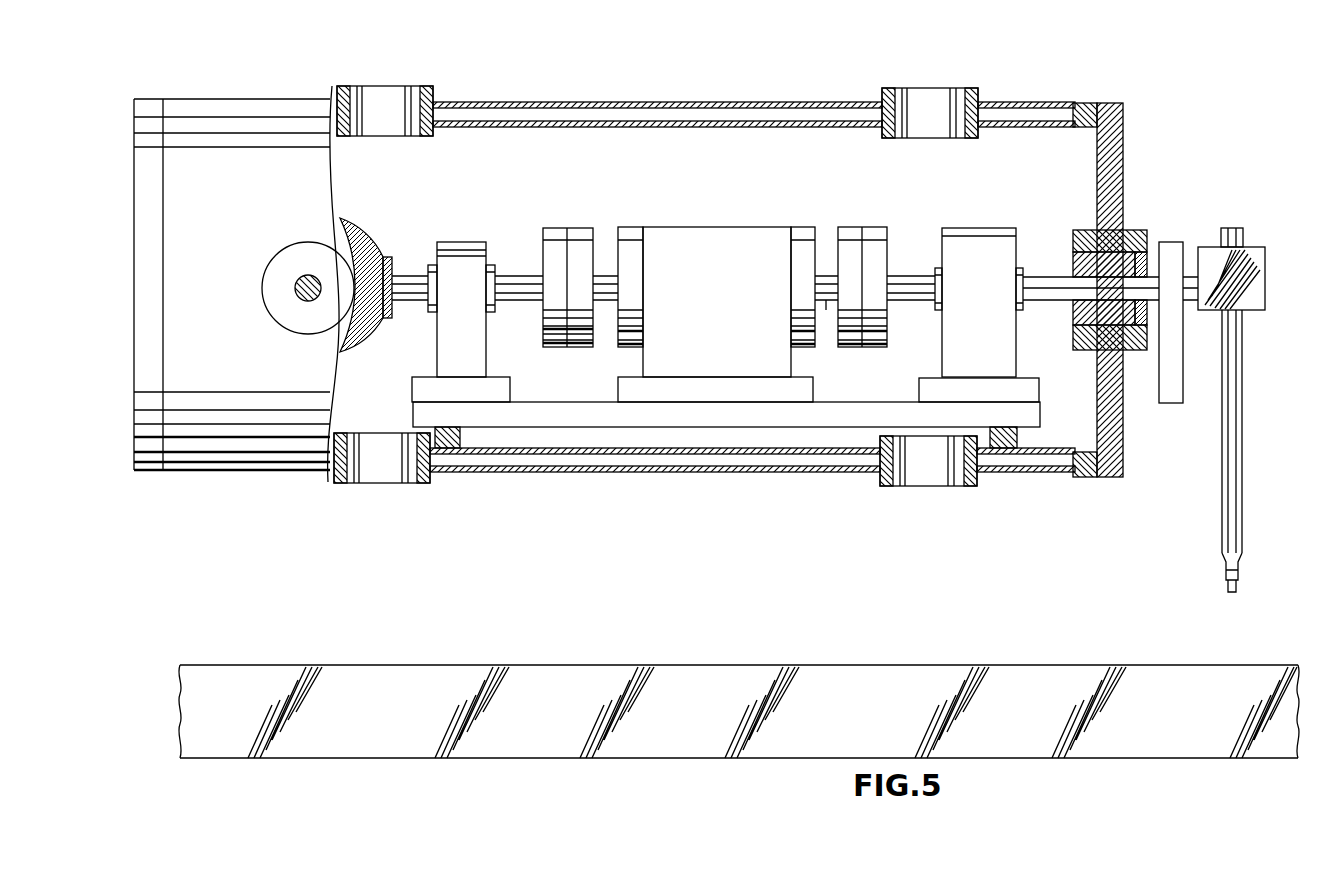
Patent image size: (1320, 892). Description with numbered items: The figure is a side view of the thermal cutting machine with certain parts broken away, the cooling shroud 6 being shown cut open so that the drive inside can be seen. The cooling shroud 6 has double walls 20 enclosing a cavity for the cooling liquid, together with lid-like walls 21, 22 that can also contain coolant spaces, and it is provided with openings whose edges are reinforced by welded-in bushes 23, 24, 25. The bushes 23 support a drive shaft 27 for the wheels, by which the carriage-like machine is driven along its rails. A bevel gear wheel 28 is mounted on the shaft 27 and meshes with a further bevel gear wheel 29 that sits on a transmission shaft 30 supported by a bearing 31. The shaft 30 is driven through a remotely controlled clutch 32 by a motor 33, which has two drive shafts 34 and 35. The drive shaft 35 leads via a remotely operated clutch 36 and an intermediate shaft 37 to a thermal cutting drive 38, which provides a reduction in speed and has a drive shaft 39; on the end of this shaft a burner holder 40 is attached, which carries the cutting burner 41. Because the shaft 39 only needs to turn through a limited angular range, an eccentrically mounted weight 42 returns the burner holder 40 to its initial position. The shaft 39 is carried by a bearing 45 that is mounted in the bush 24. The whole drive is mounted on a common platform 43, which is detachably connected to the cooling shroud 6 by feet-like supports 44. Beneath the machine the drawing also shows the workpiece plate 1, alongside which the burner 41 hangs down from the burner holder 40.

The glass plate / workpiece 1 is at (884, 677).
The cooling shroud 6 is at (256, 479).
The double walls 20 is at (498, 104).
The lid-like wall 21 is at (144, 181).
The lid-like wall 22 is at (1116, 138).
The bush 23 is at (274, 287).
The bush 24 is at (1082, 232).
The bush 25 is at (381, 114).
The drive shaft 27 is at (305, 280).
The bevel gear wheel 28 is at (346, 220).
The bevel gear wheel 29 is at (386, 260).
The transmission shaft 30 is at (409, 290).
The bearing 31 is at (459, 258).
The remotely controlled clutch 32 is at (554, 242).
The motor 33 is at (710, 250).
The drive shaft 34 is at (515, 283).
The drive shaft 35 is at (827, 312).
The remotely operated clutch 36 is at (849, 248).
The intermediate shaft 37 is at (911, 302).
The thermal cutting drive 38 is at (966, 254).
The drive shaft 39 is at (1043, 286).
The burner holder 40 is at (1252, 262).
The cutting burner 41 is at (1243, 461).
The eccentrically mounted weight 42 is at (1170, 250).
The common platform 43 is at (510, 412).
The feet-like supports 44 is at (433, 430).
The bearing 45 is at (1139, 240).